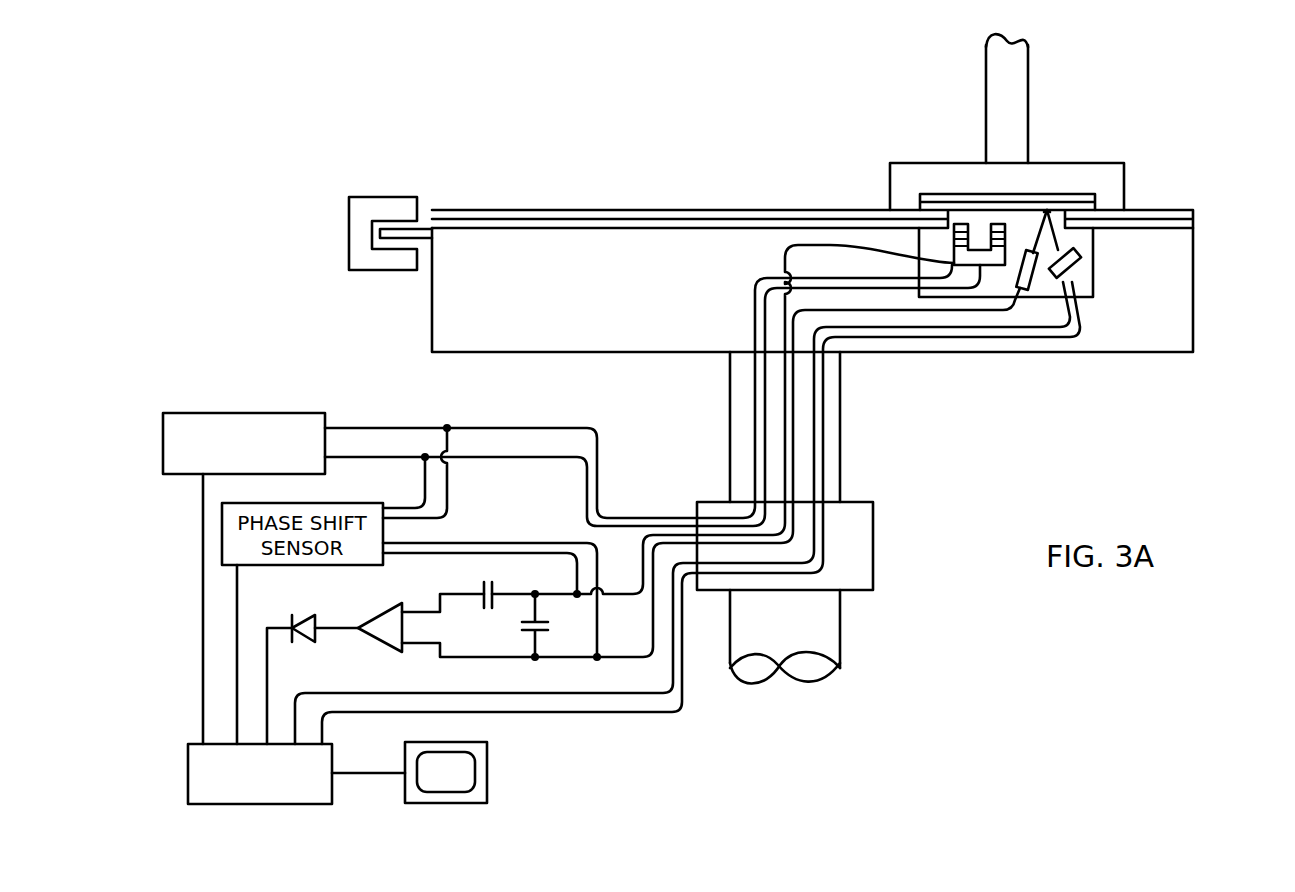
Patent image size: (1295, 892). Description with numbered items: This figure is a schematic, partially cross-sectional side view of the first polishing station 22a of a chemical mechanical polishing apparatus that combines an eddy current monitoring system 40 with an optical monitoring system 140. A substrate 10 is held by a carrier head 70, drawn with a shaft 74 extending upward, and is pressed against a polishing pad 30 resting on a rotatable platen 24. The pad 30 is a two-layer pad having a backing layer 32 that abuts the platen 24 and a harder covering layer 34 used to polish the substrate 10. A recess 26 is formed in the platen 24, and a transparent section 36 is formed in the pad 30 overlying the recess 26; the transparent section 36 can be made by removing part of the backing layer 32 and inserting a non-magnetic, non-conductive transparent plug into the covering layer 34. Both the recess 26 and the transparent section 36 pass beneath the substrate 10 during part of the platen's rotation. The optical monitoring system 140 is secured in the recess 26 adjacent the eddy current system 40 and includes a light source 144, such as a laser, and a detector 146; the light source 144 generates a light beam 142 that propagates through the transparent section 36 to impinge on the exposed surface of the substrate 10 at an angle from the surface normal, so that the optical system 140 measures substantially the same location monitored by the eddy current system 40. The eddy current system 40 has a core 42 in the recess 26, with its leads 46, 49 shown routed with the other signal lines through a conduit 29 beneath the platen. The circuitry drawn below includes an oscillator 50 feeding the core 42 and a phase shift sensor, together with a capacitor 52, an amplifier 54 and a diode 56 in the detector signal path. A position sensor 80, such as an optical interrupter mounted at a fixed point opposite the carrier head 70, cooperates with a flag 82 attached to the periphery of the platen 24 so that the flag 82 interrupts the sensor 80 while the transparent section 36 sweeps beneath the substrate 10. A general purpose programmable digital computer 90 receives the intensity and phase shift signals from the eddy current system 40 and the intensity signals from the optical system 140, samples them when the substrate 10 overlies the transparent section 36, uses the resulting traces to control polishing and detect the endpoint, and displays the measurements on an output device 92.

The first polishing station 22a is at (430, 84).
The substrate 10 is at (920, 203).
The platen 24 is at (1193, 283).
The recess 26 is at (1093, 275).
The conduit 29 is at (873, 543).
The polishing pad 30 is at (652, 203).
The backing layer 32 is at (1193, 222).
The covering layer 34 is at (1193, 212).
The transparent section 36 is at (972, 220).
The eddy current monitoring system 40 is at (145, 584).
The core 42 is at (950, 258).
The coil leads 46 is at (946, 237).
The lead 49 is at (990, 272).
The oscillator 50 is at (233, 413).
The capacitor 52 is at (530, 632).
The amplifier 54 is at (377, 640).
The diode 56 is at (300, 640).
The carrier head 70 is at (1124, 180).
The shaft 74 is at (1028, 100).
The position sensor 80 is at (373, 196).
The flag 82 is at (422, 232).
The computer 90 is at (252, 805).
The output device 92 is at (487, 765).
The optical monitoring system 140 is at (1102, 306).
The light beam 142 is at (1045, 212).
The light source 144 is at (1032, 262).
The detector 146 is at (1066, 279).